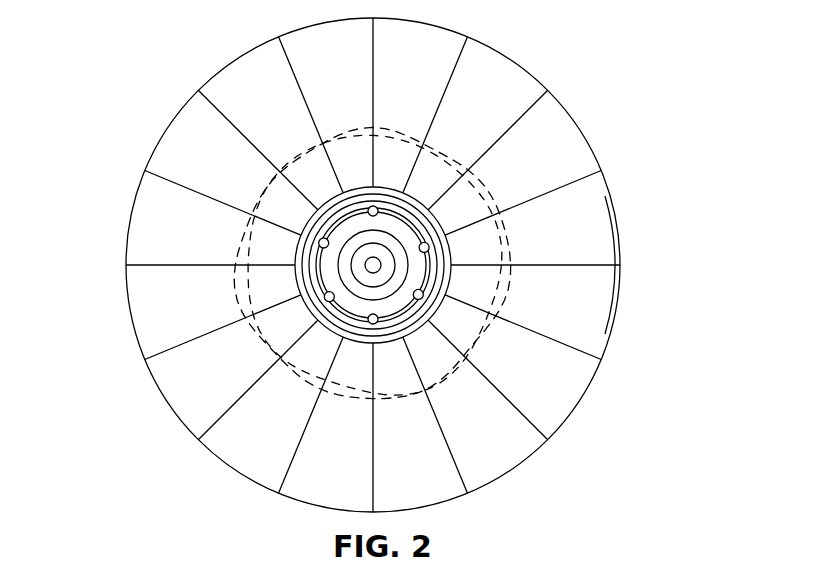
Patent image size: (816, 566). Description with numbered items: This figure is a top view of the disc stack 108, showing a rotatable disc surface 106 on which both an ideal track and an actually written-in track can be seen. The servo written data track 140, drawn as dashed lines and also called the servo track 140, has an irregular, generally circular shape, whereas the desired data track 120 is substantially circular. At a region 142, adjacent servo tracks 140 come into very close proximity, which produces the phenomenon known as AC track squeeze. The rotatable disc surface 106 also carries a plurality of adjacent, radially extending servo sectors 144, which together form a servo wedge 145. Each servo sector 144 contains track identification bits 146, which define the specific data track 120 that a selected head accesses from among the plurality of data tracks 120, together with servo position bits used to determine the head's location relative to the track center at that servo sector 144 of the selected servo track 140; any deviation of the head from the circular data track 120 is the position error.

The rotatable disc surface 106 is at (528, 458).
The disc stack 108 is at (198, 54).
The data track 120 is at (260, 193).
The servo written data track 140 is at (403, 130).
The region of close proximity 142 is at (498, 240).
The servo sector 144 is at (577, 267).
The servo wedge 145 is at (604, 264).
The track identification bits 146 is at (227, 403).